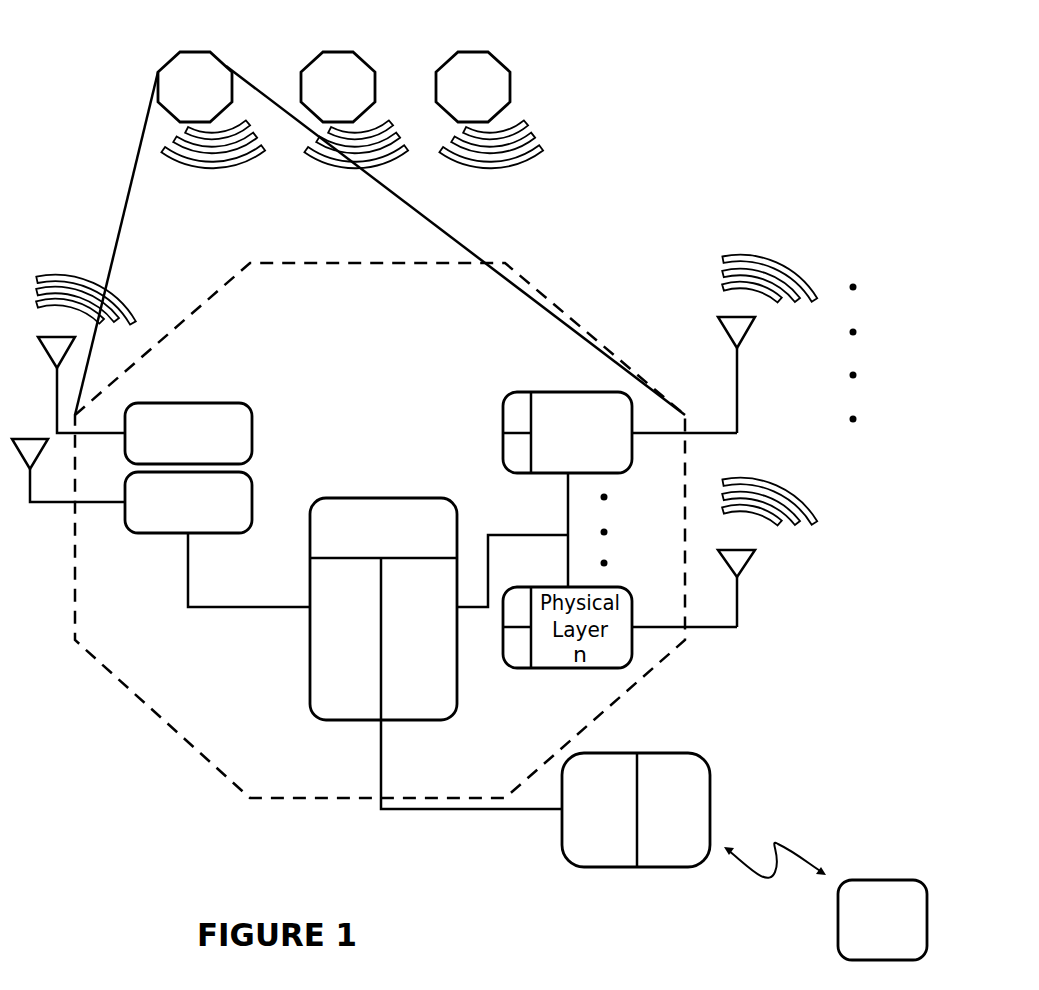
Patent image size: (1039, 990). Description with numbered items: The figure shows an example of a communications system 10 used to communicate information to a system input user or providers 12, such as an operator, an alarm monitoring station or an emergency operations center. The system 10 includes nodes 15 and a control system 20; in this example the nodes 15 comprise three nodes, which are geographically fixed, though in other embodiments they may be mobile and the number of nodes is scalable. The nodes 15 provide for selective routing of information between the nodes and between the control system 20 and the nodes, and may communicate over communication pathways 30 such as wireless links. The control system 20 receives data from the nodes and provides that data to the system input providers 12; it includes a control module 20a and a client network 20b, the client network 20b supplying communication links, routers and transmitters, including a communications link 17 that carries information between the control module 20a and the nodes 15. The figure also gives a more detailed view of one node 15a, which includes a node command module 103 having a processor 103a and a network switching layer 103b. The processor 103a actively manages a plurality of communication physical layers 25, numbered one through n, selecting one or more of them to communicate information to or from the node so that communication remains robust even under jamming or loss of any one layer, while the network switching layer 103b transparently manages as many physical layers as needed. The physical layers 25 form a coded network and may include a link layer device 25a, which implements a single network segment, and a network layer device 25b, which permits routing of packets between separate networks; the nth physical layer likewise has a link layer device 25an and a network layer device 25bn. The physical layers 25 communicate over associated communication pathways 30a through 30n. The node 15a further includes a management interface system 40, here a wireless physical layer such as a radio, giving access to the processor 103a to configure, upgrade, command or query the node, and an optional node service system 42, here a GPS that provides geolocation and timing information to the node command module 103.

The communications system 10 is at (689, 68).
The system input user or providers 12 is at (898, 935).
The nodes 15 is at (483, 43).
The node 15a is at (172, 58).
The communications link 17 is at (440, 812).
The control system 20 is at (669, 793).
The control module 20a is at (620, 823).
The client network 20b is at (699, 823).
The communication physical layers 25 is at (524, 404).
The link layer device 25a is at (502, 416).
The network layer device 25b is at (502, 452).
The link layer device of physical layer n 25an is at (503, 615).
The network layer device of physical layer n 25bn is at (503, 646).
The communication pathways 30 is at (212, 178).
The communication pathway 30a is at (778, 261).
The communication pathway 30n is at (778, 488).
The management interface system 40 is at (232, 402).
The node service system 42 is at (250, 495).
The node command module 103 is at (383, 575).
The processor 103a is at (375, 643).
The network switching layer 103b is at (449, 643).